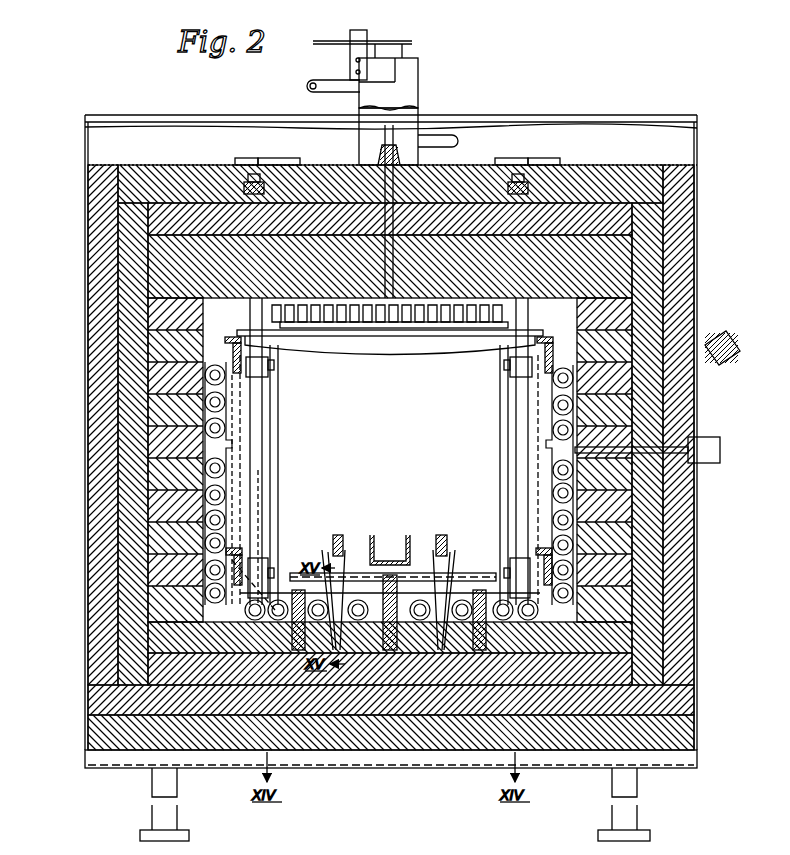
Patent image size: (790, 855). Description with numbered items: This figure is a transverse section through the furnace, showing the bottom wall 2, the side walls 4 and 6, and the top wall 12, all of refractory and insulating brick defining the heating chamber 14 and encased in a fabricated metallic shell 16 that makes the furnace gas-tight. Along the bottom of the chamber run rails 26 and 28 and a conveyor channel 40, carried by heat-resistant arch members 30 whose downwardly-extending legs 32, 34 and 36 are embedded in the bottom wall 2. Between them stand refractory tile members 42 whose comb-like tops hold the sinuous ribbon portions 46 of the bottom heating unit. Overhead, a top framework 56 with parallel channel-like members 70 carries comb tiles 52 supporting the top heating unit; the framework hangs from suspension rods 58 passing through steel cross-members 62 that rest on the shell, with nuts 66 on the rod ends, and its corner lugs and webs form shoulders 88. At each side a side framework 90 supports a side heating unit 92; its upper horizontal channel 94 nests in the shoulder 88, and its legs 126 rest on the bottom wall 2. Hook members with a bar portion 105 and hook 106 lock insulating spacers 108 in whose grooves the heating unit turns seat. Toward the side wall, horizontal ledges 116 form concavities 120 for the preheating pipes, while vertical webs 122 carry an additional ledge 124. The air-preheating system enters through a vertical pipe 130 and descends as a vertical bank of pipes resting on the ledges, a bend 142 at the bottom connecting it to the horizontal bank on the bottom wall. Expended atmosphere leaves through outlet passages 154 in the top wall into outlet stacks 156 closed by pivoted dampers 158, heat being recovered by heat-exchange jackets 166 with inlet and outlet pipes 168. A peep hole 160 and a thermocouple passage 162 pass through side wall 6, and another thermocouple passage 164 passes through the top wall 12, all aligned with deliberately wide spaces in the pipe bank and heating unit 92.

The bottom wall 2 is at (478, 700).
The side wall 4 is at (120, 518).
The side wall 6 is at (655, 538).
The top wall 12 is at (620, 258).
The heating chamber 14 is at (446, 404).
The metallic shell 16 is at (698, 665).
The rail 26 is at (340, 535).
The rail 28 is at (446, 535).
The arch member 30 is at (452, 562).
The leg 32 is at (340, 656).
The leg 34 is at (385, 656).
The leg 36 is at (440, 652).
The channel 40 is at (408, 535).
The refractory tile member 42 is at (298, 590).
The ribbon portion 46 is at (466, 582).
The comb tile 52 is at (390, 322).
The top framework 56 is at (482, 343).
The suspension rod 58 is at (258, 182).
The cross-member 62 is at (262, 192).
The nut 66 is at (268, 174).
The channel-like member 70 is at (430, 350).
The shoulder 88 is at (246, 330).
The side framework 90 is at (235, 452).
The side heating unit 92 is at (262, 480).
The upper horizontal channel 94 is at (234, 355).
The bar portion 105 is at (266, 378).
The hook 106 is at (272, 363).
The spacer 108 is at (512, 378).
The pipe-supporting ledge 116 is at (222, 388).
The concavity 120 is at (240, 470).
The vertical web 122 is at (236, 552).
The pipe-supporting ledge 124 is at (222, 566).
The leg 126 is at (215, 600).
The vertical pipe 130 is at (262, 500).
The bend 142 is at (262, 592).
The outlet passage 154 is at (347, 178).
The outlet stack 156 is at (360, 134).
The damper 158 is at (367, 45).
The peep hole 160 is at (716, 366).
The thermocouple passage 162 is at (672, 458).
The thermocouple passage 164 is at (390, 190).
The heat-exchange jacket 166 is at (416, 90).
The inlet and outlet pipe 168 is at (318, 80).